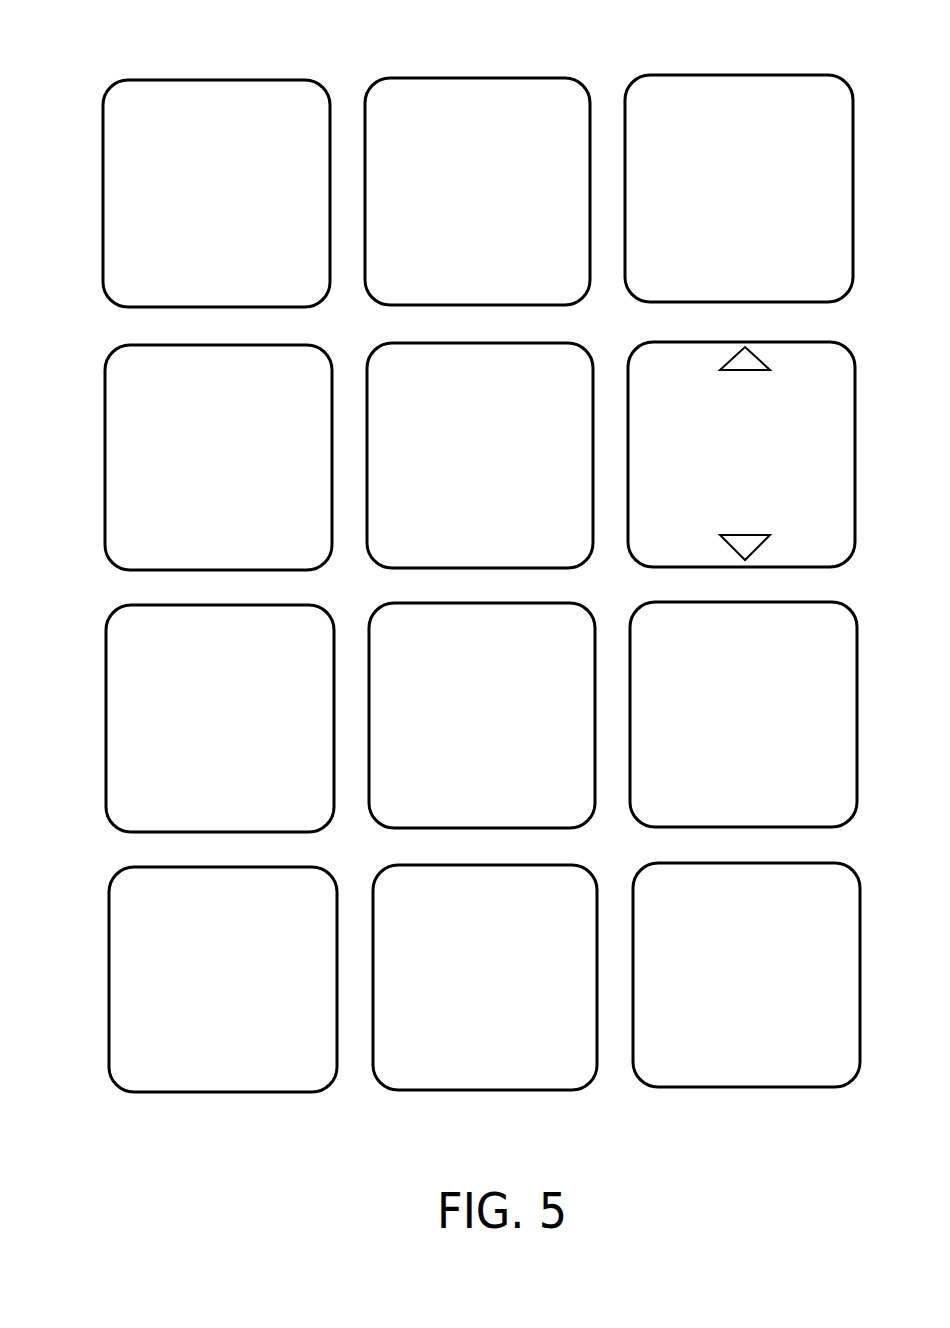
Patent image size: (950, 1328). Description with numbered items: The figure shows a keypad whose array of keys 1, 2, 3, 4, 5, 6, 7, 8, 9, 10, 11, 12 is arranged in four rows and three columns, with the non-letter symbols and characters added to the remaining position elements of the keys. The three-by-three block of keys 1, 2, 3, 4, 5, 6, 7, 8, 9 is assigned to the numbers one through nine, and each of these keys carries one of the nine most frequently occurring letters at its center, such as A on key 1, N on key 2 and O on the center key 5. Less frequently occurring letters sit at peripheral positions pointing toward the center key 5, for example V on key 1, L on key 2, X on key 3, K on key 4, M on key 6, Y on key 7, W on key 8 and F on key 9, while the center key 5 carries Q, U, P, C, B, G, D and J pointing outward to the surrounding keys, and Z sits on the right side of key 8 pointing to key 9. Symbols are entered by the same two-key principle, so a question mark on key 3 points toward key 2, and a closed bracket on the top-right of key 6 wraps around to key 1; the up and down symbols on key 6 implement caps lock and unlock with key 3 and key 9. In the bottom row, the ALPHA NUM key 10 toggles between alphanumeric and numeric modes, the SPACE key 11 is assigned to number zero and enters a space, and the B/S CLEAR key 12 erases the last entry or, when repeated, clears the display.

The key 1 is at (233, 80).
The key 2 is at (502, 78).
The key 3 is at (763, 75).
The key 4 is at (105, 460).
The center key 5 is at (580, 562).
The key 6 is at (855, 435).
The key 7 is at (106, 720).
The key 8 is at (587, 820).
The key 9 is at (857, 697).
The ALPHA NUM key 10 is at (262, 1092).
The SPACE key 11 is at (525, 1090).
The B/S CLEAR key 12 is at (783, 1087).